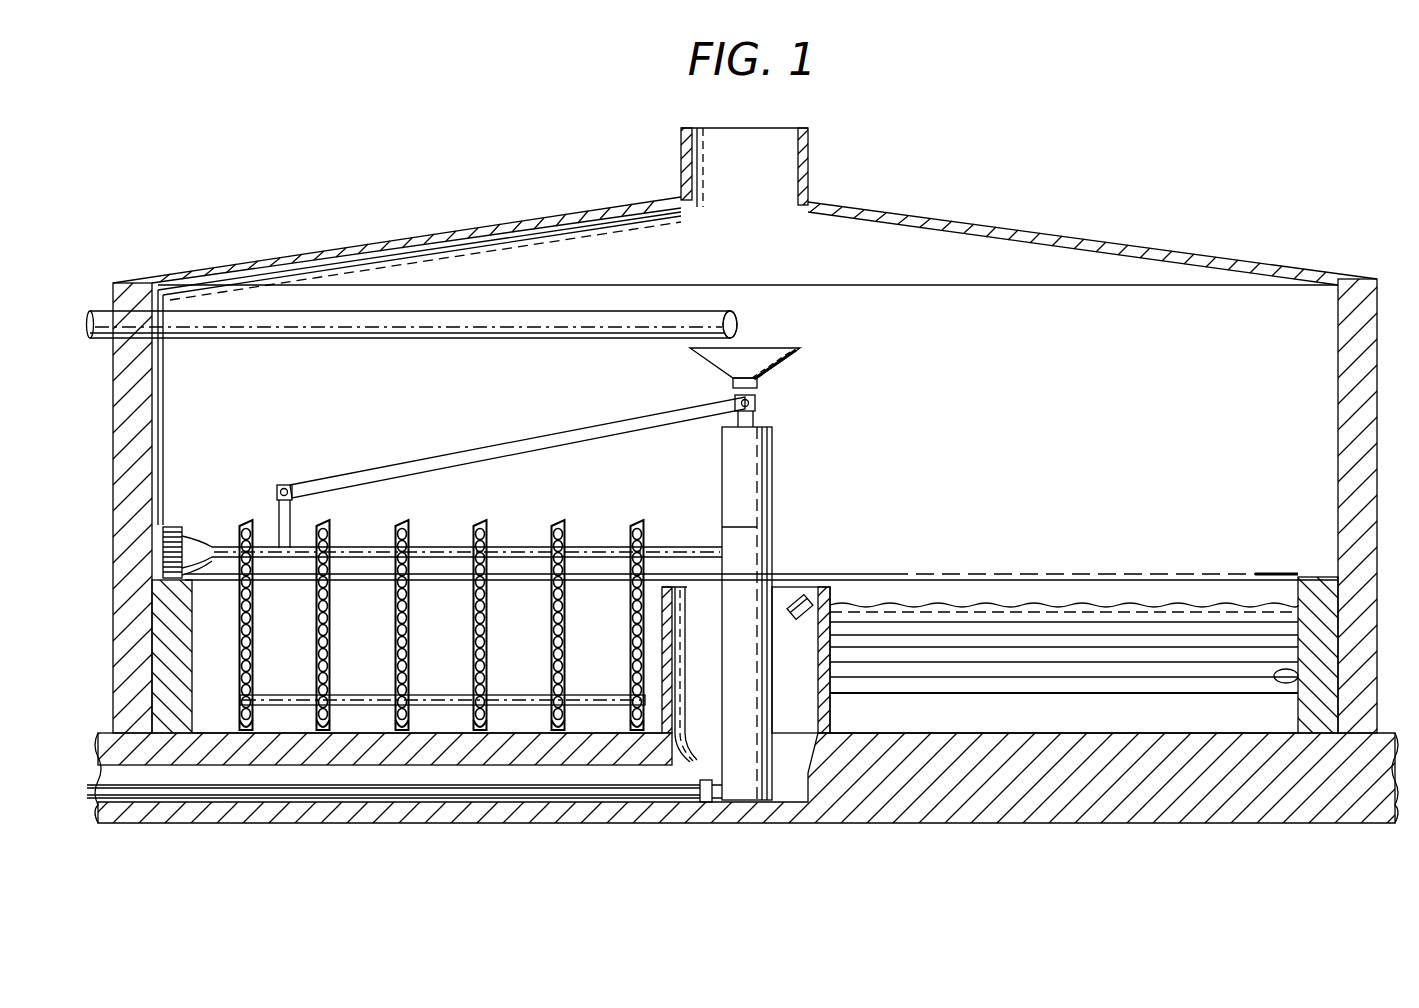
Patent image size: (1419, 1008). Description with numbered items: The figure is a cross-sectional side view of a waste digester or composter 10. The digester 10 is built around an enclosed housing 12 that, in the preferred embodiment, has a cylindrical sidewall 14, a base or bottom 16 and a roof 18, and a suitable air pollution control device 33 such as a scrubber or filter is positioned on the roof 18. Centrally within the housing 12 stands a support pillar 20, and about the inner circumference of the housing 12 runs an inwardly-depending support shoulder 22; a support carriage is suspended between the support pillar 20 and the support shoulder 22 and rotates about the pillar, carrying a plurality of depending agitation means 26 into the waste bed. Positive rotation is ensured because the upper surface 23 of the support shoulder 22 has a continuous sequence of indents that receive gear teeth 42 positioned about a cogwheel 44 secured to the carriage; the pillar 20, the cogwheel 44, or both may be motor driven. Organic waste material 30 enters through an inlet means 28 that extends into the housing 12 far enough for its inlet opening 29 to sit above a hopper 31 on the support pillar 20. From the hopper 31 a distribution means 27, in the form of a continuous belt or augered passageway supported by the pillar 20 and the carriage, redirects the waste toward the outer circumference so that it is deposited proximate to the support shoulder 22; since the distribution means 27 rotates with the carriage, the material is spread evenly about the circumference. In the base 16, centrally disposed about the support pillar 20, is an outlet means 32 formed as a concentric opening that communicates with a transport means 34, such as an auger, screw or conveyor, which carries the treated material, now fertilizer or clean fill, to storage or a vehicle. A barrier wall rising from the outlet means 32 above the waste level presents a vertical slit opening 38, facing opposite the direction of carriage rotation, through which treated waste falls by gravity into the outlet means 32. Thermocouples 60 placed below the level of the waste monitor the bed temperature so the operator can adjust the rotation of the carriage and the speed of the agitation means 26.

The waste digester 10 is at (562, 168).
The enclosed housing 12 is at (1082, 265).
The cylindrical sidewall 14 is at (1383, 470).
The base 16 is at (1132, 733).
The roof 18 is at (625, 206).
The support pillar 20 is at (743, 478).
The support shoulder 22 is at (182, 682).
The upper surface 23 is at (190, 585).
The agitation means 26 is at (410, 648).
The distribution means 27 is at (605, 435).
The inlet means 28 is at (702, 314).
The inlet opening 29 is at (740, 324).
The organic waste material 30 is at (1020, 625).
The hopper 31 is at (776, 352).
The outlet means 32 is at (796, 726).
The air pollution control device 33 is at (795, 165).
The transport means 34 is at (640, 790).
The vertical slit opening 38 is at (800, 604).
The gear teeth 42 is at (177, 526).
The cogwheel 44 is at (200, 543).
The thermocouples 60 is at (1295, 678).